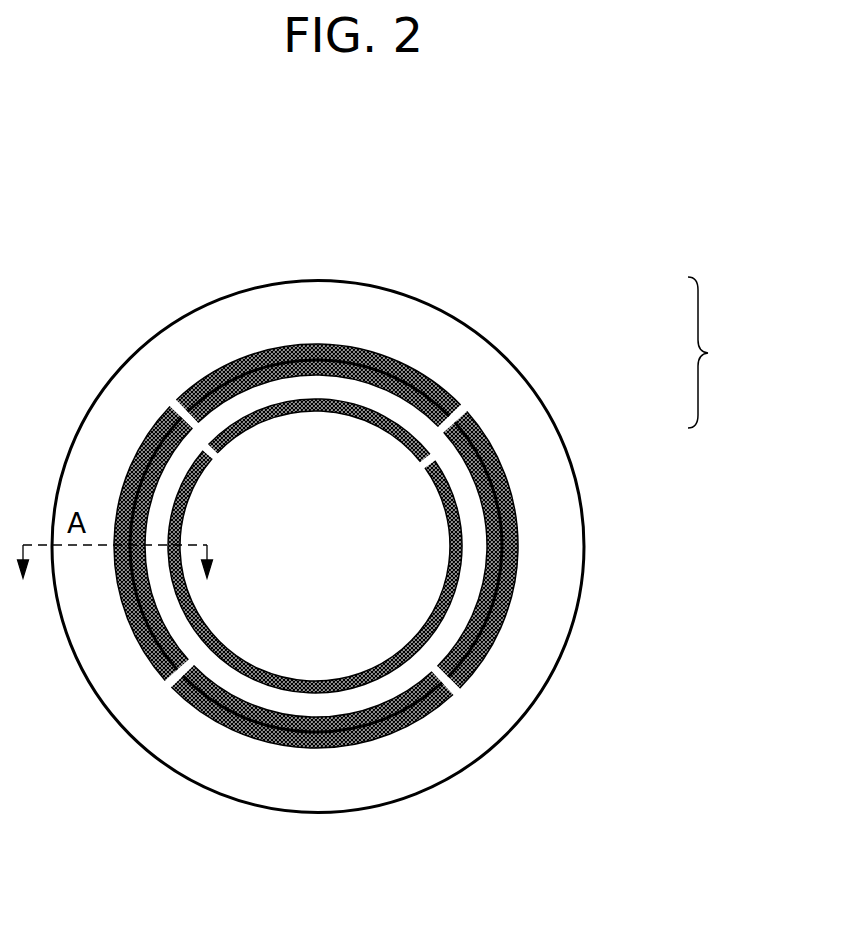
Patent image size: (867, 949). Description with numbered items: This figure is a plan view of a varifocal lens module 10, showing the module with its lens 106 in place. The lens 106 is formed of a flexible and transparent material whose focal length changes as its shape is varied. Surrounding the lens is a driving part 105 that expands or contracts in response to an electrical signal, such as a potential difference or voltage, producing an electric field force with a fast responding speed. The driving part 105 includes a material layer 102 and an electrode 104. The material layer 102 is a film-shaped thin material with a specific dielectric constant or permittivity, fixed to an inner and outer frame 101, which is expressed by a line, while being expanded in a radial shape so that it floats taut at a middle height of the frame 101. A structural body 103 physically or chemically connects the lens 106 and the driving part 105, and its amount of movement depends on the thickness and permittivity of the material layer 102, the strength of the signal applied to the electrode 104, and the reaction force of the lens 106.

The varifocal lens module 10 is at (336, 233).
The frame 101 is at (442, 299).
The material layer 102 is at (472, 346).
The structural body 103 is at (203, 352).
The electrode 104 is at (484, 476).
The driving part 105 is at (727, 352).
The lens 106 is at (222, 455).